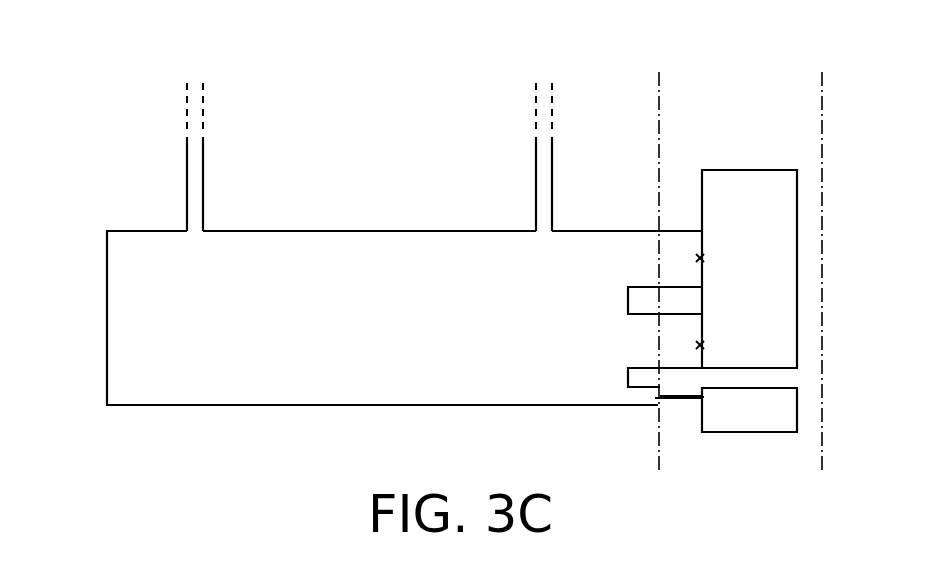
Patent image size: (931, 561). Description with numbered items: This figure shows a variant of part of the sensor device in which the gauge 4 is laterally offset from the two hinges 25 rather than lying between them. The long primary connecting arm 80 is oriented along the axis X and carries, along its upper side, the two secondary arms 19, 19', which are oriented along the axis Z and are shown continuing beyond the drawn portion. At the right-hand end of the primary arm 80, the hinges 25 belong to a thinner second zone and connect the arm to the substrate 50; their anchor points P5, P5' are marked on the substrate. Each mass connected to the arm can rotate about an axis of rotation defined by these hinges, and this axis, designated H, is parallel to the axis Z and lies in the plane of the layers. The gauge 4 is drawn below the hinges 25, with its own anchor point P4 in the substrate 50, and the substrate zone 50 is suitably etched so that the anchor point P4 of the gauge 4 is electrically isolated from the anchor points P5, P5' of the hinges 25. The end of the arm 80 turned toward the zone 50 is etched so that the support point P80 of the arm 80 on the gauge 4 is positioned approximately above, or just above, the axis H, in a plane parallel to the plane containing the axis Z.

The primary connecting arm 80 is at (128, 332).
The secondary arm 19 is at (221, 157).
The secondary arm 19' is at (517, 157).
The hinge 25 is at (680, 340).
The gauge 4 is at (670, 402).
The substrate 50 is at (745, 425).
The axis of rotation H is at (659, 83).
The axis Z is at (822, 85).
The anchor point of hinge P5 is at (714, 261).
The anchor point of hinge P5' is at (714, 341).
The support point of arm P80 is at (660, 398).
The anchor point of gauge P4 is at (702, 398).